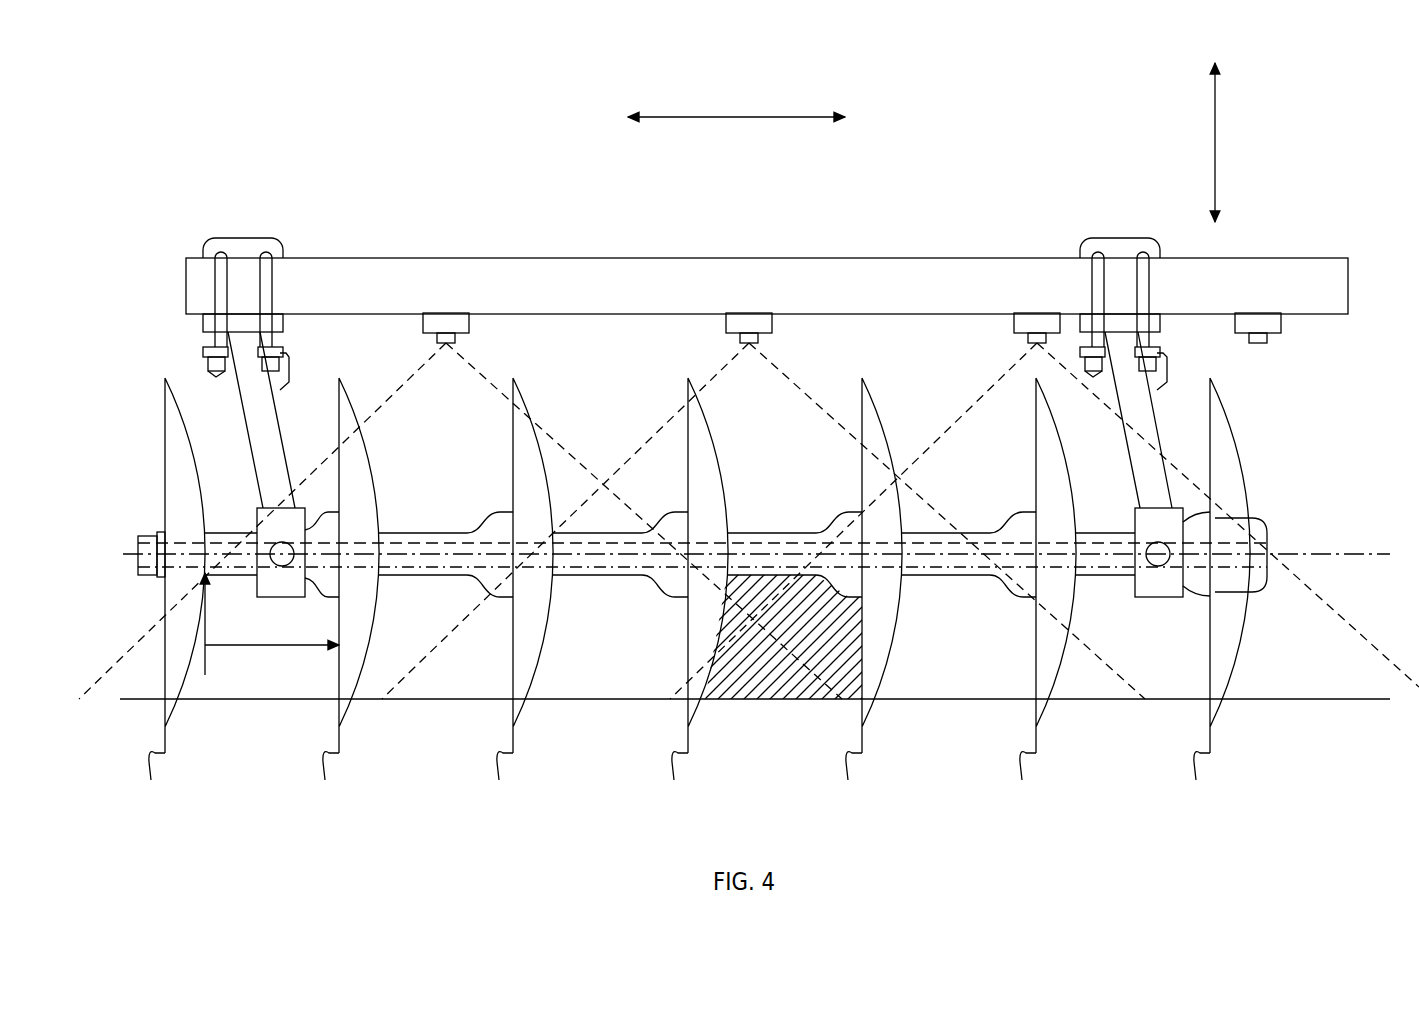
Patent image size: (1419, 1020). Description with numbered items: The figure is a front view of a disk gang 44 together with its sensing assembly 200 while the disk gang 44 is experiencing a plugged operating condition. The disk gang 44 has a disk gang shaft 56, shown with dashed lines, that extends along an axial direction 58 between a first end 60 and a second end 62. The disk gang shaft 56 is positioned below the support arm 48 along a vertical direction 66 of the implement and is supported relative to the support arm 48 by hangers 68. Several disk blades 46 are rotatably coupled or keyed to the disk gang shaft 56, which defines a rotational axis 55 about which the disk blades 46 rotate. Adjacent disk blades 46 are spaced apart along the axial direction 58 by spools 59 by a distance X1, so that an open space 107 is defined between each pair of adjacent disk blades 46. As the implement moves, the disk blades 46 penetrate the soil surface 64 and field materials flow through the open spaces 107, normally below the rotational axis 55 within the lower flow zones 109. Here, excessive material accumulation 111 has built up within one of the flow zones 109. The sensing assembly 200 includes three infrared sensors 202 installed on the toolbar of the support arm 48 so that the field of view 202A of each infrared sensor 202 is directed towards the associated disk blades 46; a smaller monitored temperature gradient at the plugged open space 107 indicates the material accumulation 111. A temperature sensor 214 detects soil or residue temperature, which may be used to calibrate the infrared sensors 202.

The disk gang 44 is at (203, 210).
The disk blade 46 is at (693, 595).
The support arm 48 is at (586, 257).
The rotational axis 55 is at (1348, 556).
The disk gang shaft 56 is at (1100, 578).
The axial direction 58 is at (725, 116).
The spool 59 is at (445, 577).
The first end 60 is at (102, 548).
The second end 62 is at (1278, 540).
The soil surface 64 is at (1289, 699).
The vertical direction 66 is at (1215, 148).
The hanger 68 is at (248, 407).
The open space 107 is at (393, 420).
The flow zone 109 is at (493, 661).
The material accumulation 111 is at (813, 680).
The sensing assembly 200 is at (997, 148).
The infrared sensor 202 is at (452, 311).
The field of view 202A is at (413, 369).
The temperature sensor 214 is at (1265, 311).
The distance X1 is at (255, 645).